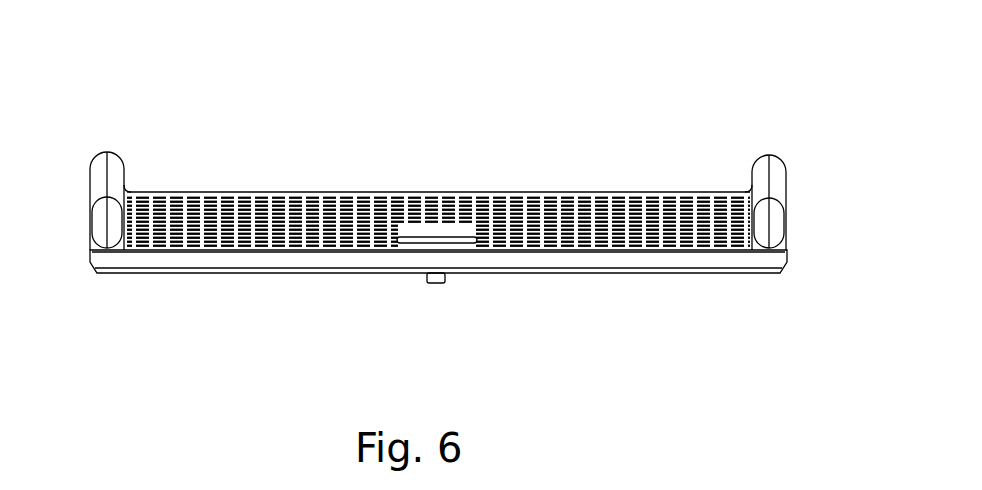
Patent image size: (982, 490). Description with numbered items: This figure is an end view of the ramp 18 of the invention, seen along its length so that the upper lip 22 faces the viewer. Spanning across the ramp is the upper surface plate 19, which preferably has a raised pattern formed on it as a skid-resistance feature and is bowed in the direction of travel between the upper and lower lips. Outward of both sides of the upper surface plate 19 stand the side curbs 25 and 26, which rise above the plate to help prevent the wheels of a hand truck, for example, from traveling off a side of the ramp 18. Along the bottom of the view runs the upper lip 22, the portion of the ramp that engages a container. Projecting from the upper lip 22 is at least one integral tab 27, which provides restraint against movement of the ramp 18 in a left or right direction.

The ramp 18 is at (595, 135).
The upper surface plate 19 is at (293, 190).
The upper lip 22 is at (582, 275).
The side curb 25 is at (118, 150).
The side curb 26 is at (785, 157).
The integral tab 27 is at (438, 285).